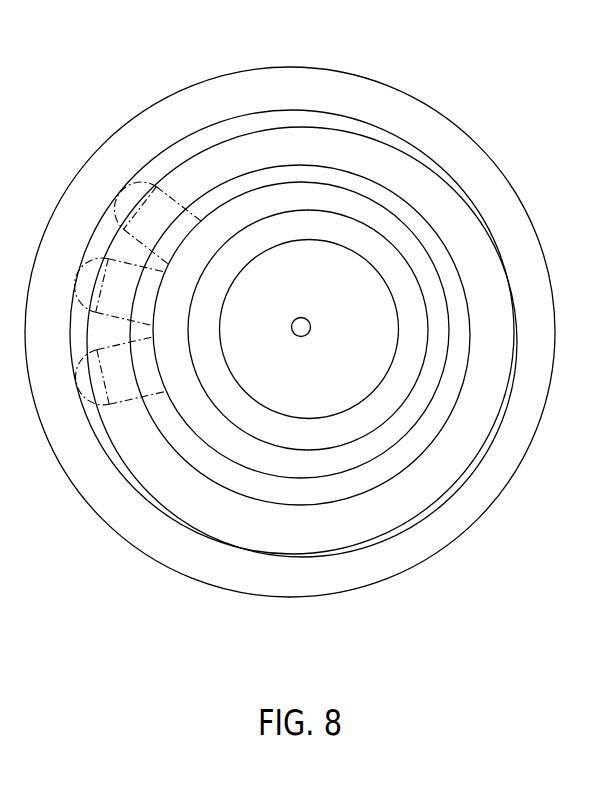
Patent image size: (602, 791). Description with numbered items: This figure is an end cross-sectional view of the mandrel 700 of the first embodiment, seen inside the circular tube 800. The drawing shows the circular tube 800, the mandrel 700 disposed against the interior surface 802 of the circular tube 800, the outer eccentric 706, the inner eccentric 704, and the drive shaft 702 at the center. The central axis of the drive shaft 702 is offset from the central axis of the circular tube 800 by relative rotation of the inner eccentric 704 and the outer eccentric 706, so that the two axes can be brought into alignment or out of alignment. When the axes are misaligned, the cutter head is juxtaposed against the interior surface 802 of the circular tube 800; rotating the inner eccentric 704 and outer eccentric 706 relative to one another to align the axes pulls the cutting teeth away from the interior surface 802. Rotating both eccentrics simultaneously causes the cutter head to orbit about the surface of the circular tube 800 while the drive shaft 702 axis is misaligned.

The circular tube 800 is at (445, 147).
The interior surface 802 is at (282, 111).
The mandrel 700 is at (302, 342).
The drive shaft 702 is at (309, 329).
The inner eccentric 704 is at (249, 449).
The outer eccentric 706 is at (353, 498).